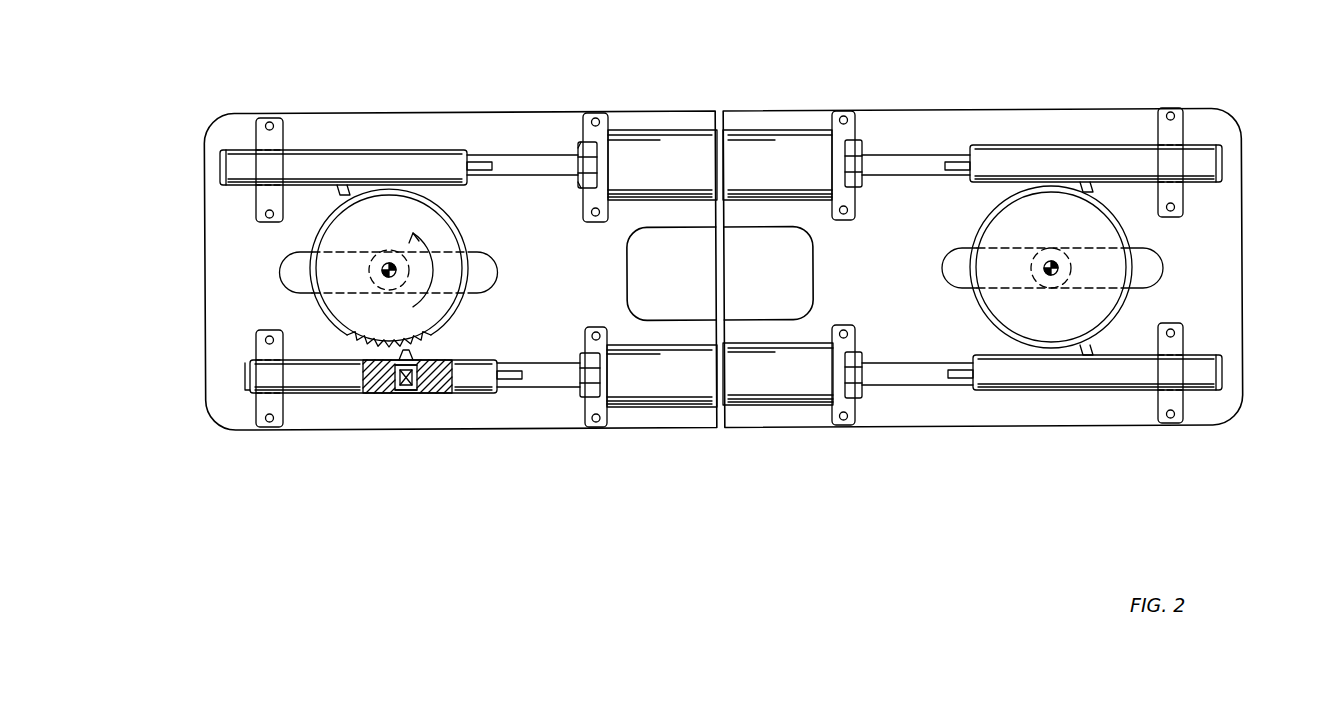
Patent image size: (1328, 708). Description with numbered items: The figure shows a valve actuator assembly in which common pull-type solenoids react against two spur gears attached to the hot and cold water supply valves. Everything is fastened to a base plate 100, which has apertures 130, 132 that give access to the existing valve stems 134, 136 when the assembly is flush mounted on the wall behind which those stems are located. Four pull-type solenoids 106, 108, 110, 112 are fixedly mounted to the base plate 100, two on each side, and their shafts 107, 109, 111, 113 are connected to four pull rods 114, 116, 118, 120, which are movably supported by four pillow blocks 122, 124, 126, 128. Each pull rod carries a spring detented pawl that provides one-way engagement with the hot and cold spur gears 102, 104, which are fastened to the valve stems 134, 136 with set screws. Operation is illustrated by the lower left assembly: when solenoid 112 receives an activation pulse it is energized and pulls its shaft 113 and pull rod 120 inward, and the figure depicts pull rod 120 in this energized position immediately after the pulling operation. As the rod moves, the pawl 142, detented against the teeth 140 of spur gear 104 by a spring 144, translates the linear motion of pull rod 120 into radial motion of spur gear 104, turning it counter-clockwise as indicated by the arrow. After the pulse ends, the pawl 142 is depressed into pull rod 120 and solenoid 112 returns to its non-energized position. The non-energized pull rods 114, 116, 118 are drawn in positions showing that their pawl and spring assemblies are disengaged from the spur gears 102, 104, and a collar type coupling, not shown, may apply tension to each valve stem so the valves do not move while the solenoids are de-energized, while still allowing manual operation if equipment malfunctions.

The base plate 100 is at (877, 130).
The spur gear 102 is at (1088, 233).
The spur gear 104 is at (386, 223).
The pull-type solenoid 106 is at (797, 145).
The solenoid shaft 107 is at (918, 163).
The pull-type solenoid 108 is at (795, 377).
The solenoid shaft 109 is at (928, 373).
The pull-type solenoid 110 is at (669, 147).
The solenoid shaft 111 is at (552, 167).
The pull-type solenoid 112 is at (668, 377).
The solenoid shaft 113 is at (555, 375).
The pull rod 114 is at (1005, 162).
The pull rod 116 is at (1085, 370).
The pull rod 118 is at (333, 163).
The pull rod 120 is at (312, 375).
The pillow block 122 is at (1172, 155).
The pillow block 124 is at (1173, 370).
The pillow block 126 is at (268, 157).
The pillow block 128 is at (270, 377).
The aperture 130 is at (297, 275).
The aperture 132 is at (1152, 272).
The valve stem 134 is at (378, 265).
The valve stem 136 is at (1072, 263).
The teeth 140 is at (353, 340).
The pawl 142 is at (430, 390).
The spring 144 is at (408, 392).